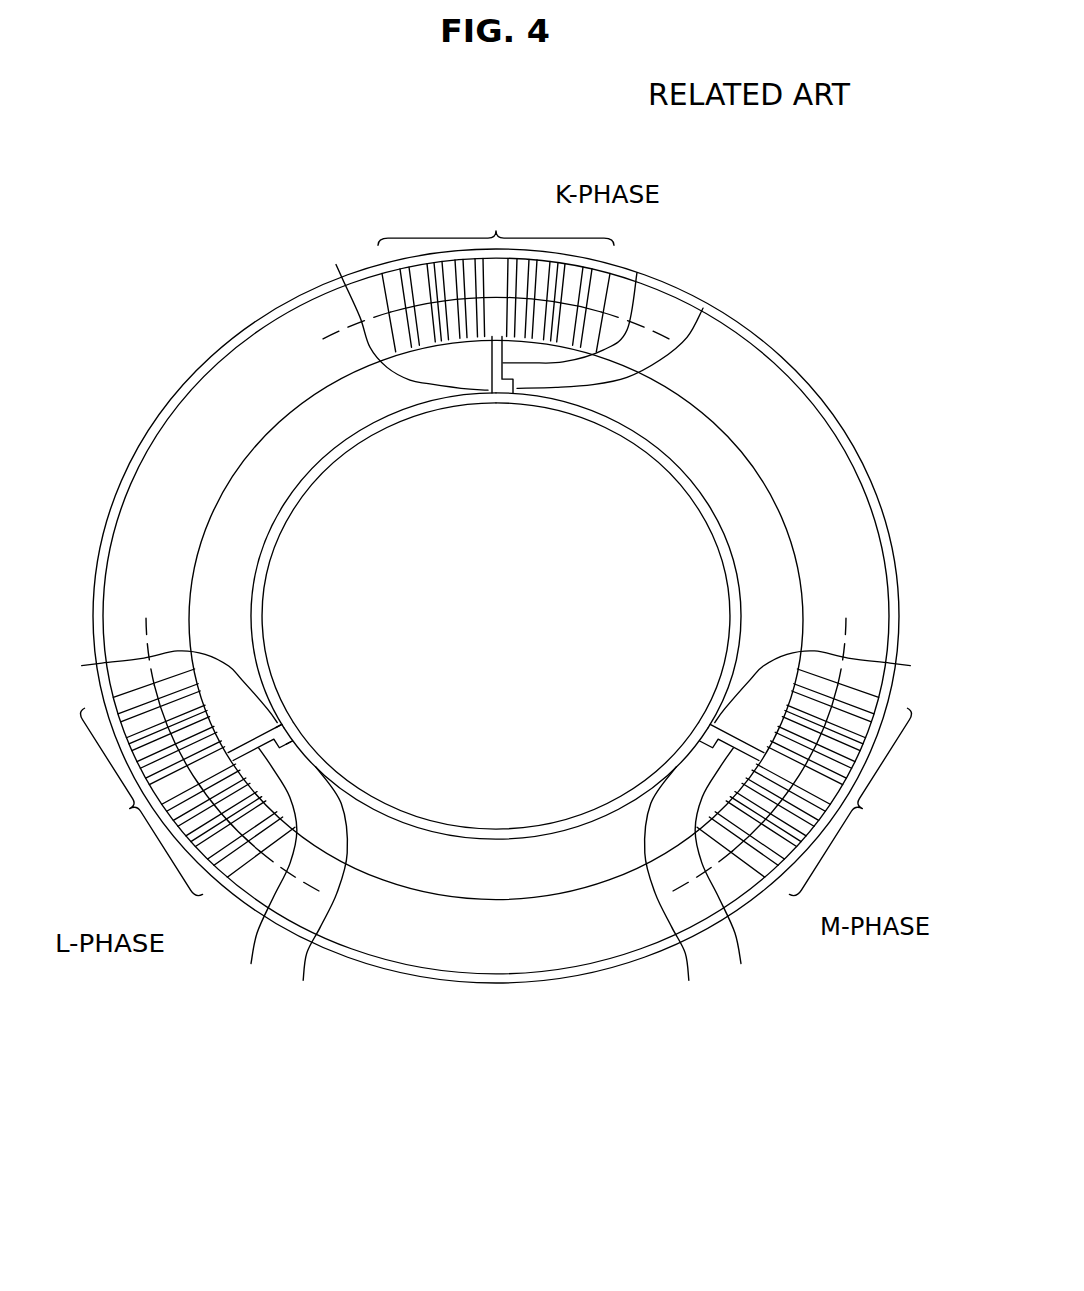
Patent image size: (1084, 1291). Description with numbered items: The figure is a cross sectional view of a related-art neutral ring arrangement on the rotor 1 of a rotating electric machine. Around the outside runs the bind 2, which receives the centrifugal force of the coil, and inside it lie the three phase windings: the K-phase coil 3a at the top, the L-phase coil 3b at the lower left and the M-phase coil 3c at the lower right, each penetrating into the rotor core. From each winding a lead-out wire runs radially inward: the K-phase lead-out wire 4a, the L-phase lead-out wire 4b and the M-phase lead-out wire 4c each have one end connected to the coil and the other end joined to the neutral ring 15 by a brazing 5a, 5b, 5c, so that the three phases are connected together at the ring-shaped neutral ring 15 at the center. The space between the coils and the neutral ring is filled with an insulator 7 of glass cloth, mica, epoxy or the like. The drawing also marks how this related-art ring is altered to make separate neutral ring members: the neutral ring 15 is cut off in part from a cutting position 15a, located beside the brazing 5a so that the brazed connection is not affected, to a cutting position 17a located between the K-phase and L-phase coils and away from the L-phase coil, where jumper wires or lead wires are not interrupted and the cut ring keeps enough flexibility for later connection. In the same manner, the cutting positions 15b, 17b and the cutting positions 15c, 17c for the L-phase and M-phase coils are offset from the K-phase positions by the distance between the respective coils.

The rotor 1 is at (552, 1009).
The bind 2 is at (797, 372).
The K-phase coil 3a is at (496, 277).
The L-phase coil 3b is at (187, 778).
The M-phase coil 3c is at (804, 778).
The K-phase lead-out wire 4a is at (637, 273).
The L-phase lead-out wire 4b is at (250, 967).
The M-phase lead-out wire 4c is at (741, 964).
The brazing 5a is at (336, 264).
The brazing 5b is at (82, 665).
The brazing 5c is at (910, 665).
The insulator 7 is at (287, 457).
The neutral ring 15 is at (344, 750).
The cutting position 15a is at (483, 420).
The cutting position 15b is at (311, 713).
The cutting position 15c is at (687, 710).
The cutting position 17a is at (354, 472).
The cutting position 17b is at (443, 810).
The cutting position 17c is at (697, 551).